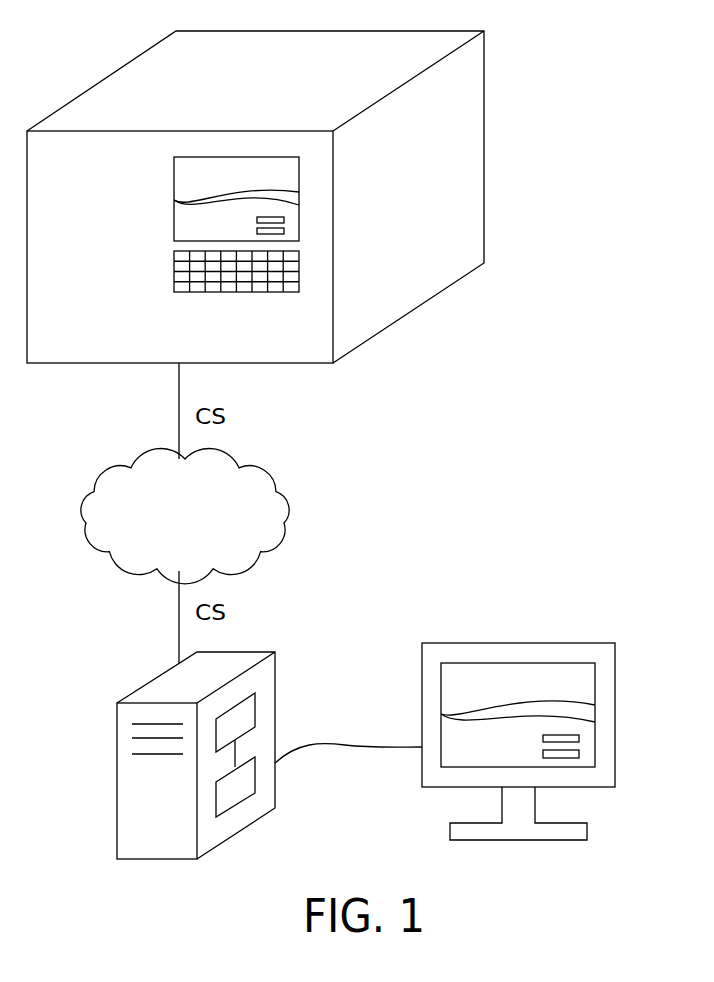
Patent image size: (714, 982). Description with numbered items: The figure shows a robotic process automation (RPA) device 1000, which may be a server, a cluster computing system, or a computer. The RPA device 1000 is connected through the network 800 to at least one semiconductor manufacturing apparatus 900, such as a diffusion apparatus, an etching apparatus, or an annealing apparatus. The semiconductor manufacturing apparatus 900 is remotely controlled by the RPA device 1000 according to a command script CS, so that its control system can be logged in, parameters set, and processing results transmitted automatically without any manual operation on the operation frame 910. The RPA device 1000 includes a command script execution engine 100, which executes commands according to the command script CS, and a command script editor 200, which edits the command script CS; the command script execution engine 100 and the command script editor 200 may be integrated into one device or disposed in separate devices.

The semiconductor manufacturing apparatus 900 is at (462, 173).
The operation frame 910 is at (299, 212).
The network 800 is at (212, 539).
The robotic process automation (RPA) device 1000 is at (366, 709).
The command script execution engine 100 is at (255, 710).
The command script editor 200 is at (255, 787).